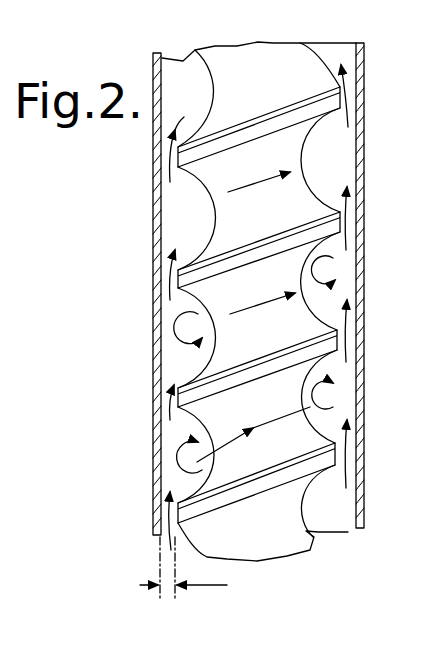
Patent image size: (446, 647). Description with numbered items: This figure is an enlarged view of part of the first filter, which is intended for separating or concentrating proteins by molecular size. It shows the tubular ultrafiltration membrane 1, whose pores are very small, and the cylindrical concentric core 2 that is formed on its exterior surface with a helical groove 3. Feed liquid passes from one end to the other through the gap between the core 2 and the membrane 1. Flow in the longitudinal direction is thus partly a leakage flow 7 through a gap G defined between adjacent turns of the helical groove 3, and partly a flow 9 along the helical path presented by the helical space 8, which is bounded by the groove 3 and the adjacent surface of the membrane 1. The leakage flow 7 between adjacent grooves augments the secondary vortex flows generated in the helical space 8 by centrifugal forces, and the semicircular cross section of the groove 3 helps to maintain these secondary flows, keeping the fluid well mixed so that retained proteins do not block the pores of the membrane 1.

The tubular ultrafiltration membrane 1 is at (150, 223).
The cylindrical concentric core 2 is at (265, 58).
The helical groove 3 is at (305, 163).
The leakage flow 7 is at (168, 282).
The helical space 8 is at (168, 350).
The flow along the helical path 9 is at (255, 183).
The gap G is at (183, 583).